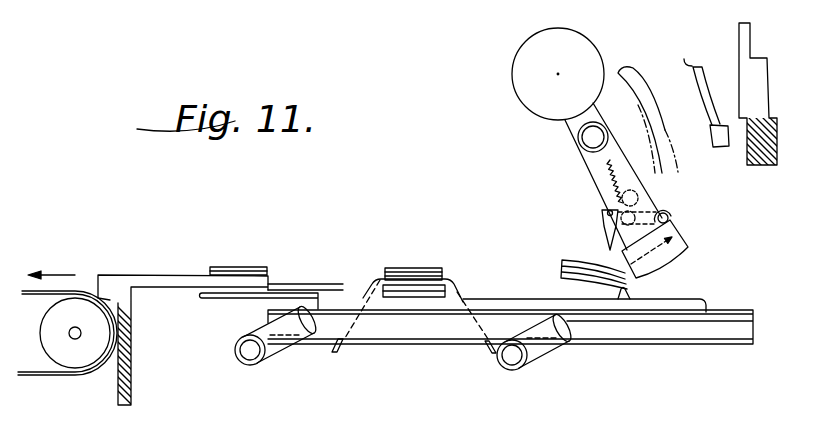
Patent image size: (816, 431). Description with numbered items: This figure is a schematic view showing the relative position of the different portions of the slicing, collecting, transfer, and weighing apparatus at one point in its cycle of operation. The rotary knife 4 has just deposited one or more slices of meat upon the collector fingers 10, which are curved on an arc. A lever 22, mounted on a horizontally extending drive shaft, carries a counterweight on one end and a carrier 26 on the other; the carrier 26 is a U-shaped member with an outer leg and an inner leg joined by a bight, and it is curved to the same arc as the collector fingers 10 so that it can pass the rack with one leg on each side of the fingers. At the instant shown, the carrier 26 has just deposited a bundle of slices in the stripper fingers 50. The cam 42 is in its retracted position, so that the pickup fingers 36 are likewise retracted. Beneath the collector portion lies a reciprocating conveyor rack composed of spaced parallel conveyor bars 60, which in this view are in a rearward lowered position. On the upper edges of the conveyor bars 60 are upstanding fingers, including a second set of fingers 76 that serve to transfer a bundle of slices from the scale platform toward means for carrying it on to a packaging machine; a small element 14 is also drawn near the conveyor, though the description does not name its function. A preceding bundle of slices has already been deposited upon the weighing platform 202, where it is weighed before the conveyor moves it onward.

The rotary knife 4 is at (743, 33).
The cam 42 is at (623, 70).
The collector fingers 10 is at (696, 92).
The lever 22 is at (602, 167).
The pickup fingers 36 is at (601, 220).
The stripper fingers 50 is at (578, 249).
The carrier 26 is at (683, 257).
The stop 14 is at (633, 297).
The conveyor bars 60 is at (703, 303).
The weighing platform 202 is at (373, 280).
The second set of fingers 76 is at (450, 292).